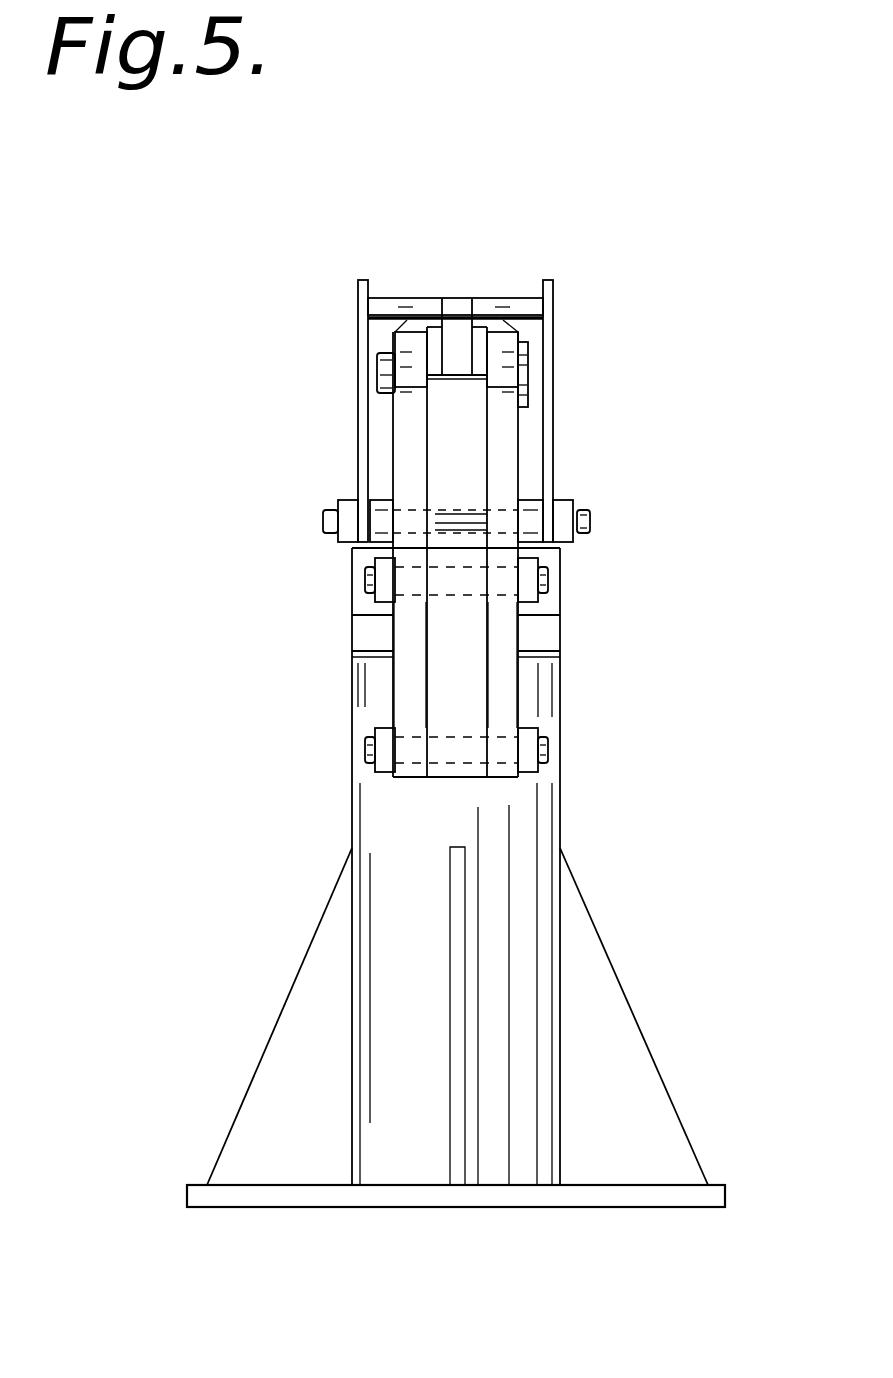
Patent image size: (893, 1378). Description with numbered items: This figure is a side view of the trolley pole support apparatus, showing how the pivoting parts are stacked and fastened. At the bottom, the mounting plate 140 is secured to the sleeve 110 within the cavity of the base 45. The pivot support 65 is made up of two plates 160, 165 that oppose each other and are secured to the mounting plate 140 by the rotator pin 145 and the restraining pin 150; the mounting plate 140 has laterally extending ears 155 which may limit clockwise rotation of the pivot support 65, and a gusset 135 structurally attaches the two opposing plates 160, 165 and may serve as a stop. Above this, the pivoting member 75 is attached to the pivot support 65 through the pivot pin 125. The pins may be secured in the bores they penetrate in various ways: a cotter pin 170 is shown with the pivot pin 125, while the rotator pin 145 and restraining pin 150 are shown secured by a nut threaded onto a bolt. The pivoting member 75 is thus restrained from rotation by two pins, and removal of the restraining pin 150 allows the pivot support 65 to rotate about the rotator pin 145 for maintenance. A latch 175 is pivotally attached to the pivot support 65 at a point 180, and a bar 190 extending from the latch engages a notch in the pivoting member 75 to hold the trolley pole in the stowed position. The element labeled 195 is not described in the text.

The base 45 is at (312, 1107).
The pivot support 65 is at (408, 417).
The pivoting member 75 is at (458, 310).
The sleeve 110 is at (353, 556).
The pivot pin 125 is at (527, 377).
The gusset 135 is at (450, 423).
The mounting plate 140 is at (452, 708).
The rotator pin 145 is at (550, 755).
The restraining pin 150 is at (367, 585).
The laterally extending ears 155 is at (463, 607).
The plate 160 is at (407, 668).
The plate 165 is at (503, 700).
The cotter pin 170 is at (392, 345).
The latch 175 is at (357, 288).
The point 180 is at (590, 523).
The bar 190 is at (413, 302).
The outer housing walls 195 is at (370, 638).